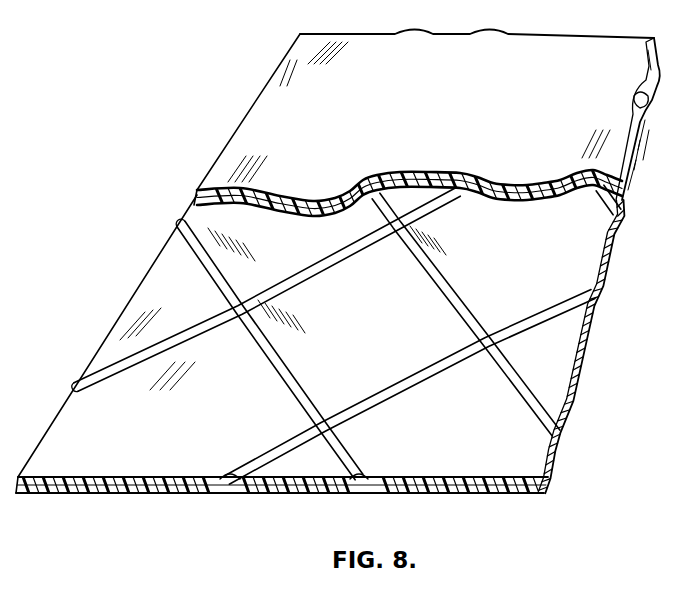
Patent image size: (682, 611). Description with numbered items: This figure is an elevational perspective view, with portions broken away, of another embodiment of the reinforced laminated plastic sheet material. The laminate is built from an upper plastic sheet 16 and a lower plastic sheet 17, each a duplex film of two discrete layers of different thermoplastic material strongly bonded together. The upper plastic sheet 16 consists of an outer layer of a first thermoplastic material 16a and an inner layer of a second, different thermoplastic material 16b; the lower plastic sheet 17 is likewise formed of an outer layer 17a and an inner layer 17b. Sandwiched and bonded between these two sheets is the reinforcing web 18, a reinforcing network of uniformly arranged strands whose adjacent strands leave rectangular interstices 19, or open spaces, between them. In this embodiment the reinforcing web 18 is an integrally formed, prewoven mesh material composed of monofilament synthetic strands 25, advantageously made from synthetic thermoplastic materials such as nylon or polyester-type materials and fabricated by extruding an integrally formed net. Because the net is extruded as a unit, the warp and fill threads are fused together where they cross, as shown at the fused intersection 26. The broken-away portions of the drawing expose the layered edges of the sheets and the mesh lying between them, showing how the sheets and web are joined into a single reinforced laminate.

The upper plastic sheet 16 is at (621, 50).
The outer layer of first thermoplastic material 16a is at (220, 178).
The inner layer of second thermoplastic material 16b is at (197, 200).
The lower plastic sheet 17 is at (580, 265).
The outer layer 17a is at (540, 494).
The inner layer 17b is at (540, 477).
The reinforcing web 18 is at (290, 377).
The interstices 19 is at (272, 312).
The monofilament synthetic strands 25 is at (450, 294).
The fused intersection 26 is at (490, 343).